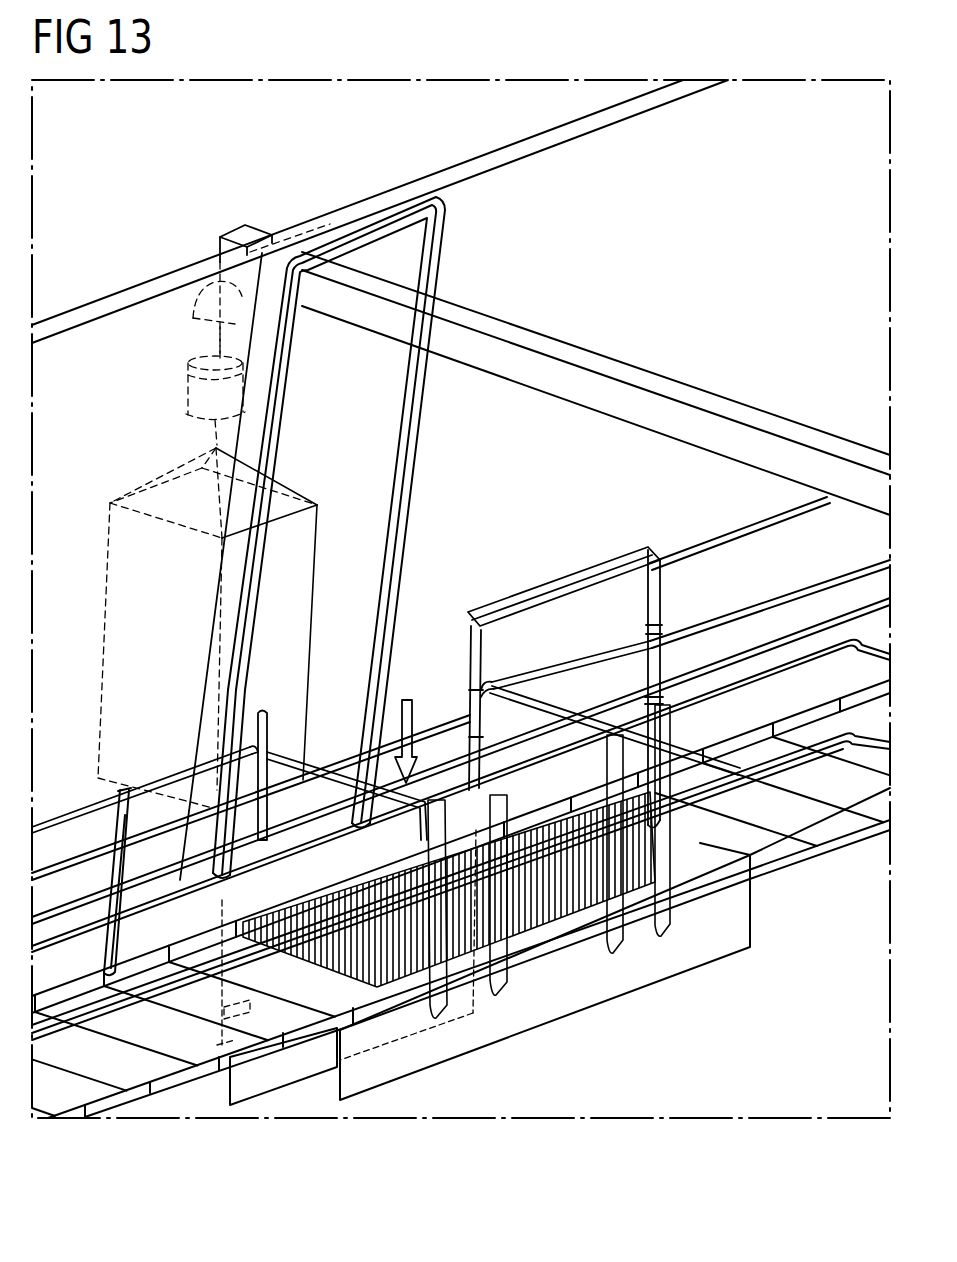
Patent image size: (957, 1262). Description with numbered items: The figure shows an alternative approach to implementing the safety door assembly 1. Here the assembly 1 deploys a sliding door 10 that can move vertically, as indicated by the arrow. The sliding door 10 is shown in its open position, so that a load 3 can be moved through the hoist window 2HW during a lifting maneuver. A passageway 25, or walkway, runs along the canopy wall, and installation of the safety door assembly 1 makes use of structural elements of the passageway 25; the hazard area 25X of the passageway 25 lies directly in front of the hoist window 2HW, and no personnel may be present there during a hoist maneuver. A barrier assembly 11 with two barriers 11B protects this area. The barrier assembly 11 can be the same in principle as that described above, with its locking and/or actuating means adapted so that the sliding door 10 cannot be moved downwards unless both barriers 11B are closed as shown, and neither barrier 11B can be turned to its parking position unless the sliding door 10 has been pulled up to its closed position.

The safety door assembly 1 is at (712, 596).
The hoist window 2HW is at (366, 459).
The load 3 is at (104, 617).
The sliding door 10 is at (273, 1080).
The barrier assembly 11 is at (627, 530).
The barrier 11B is at (333, 782).
The passageway 25 is at (772, 857).
The hazard area 25X is at (545, 915).